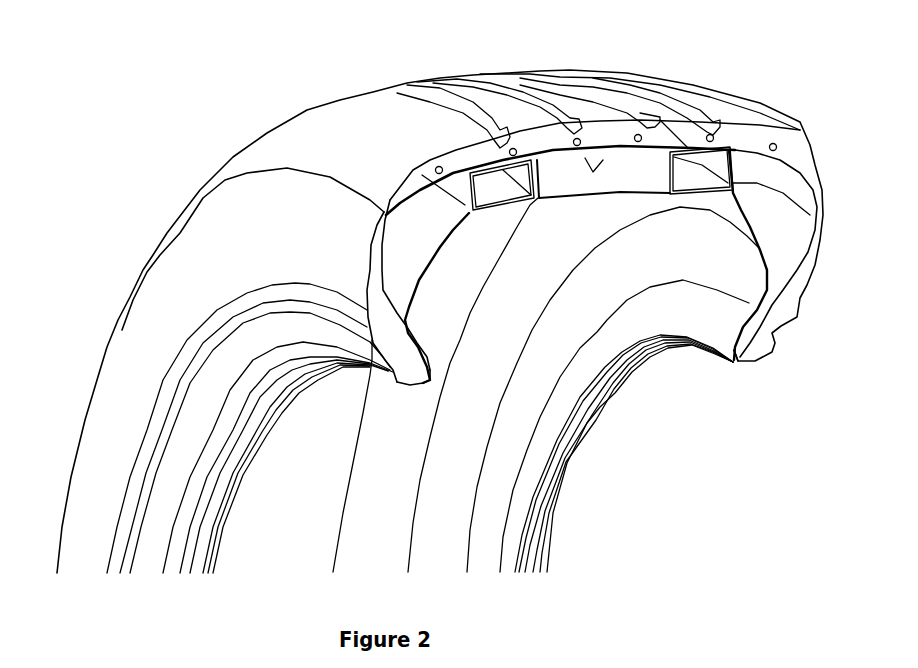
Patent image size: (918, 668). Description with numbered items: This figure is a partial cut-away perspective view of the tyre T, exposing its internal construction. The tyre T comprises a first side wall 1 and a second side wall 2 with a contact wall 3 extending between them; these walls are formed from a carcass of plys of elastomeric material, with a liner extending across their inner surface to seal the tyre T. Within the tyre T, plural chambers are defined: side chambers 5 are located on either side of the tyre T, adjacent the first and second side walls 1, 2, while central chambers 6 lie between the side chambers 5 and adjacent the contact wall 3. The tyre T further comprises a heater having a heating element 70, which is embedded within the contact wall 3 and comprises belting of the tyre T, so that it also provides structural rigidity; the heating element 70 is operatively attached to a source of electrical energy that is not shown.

The tyre T is at (132, 134).
The first side wall 1 is at (235, 197).
The second side wall 2 is at (810, 300).
The contact wall 3 is at (747, 143).
The side chambers 5 is at (404, 233).
The central chambers 6 is at (607, 172).
The heating element 70 is at (779, 142).